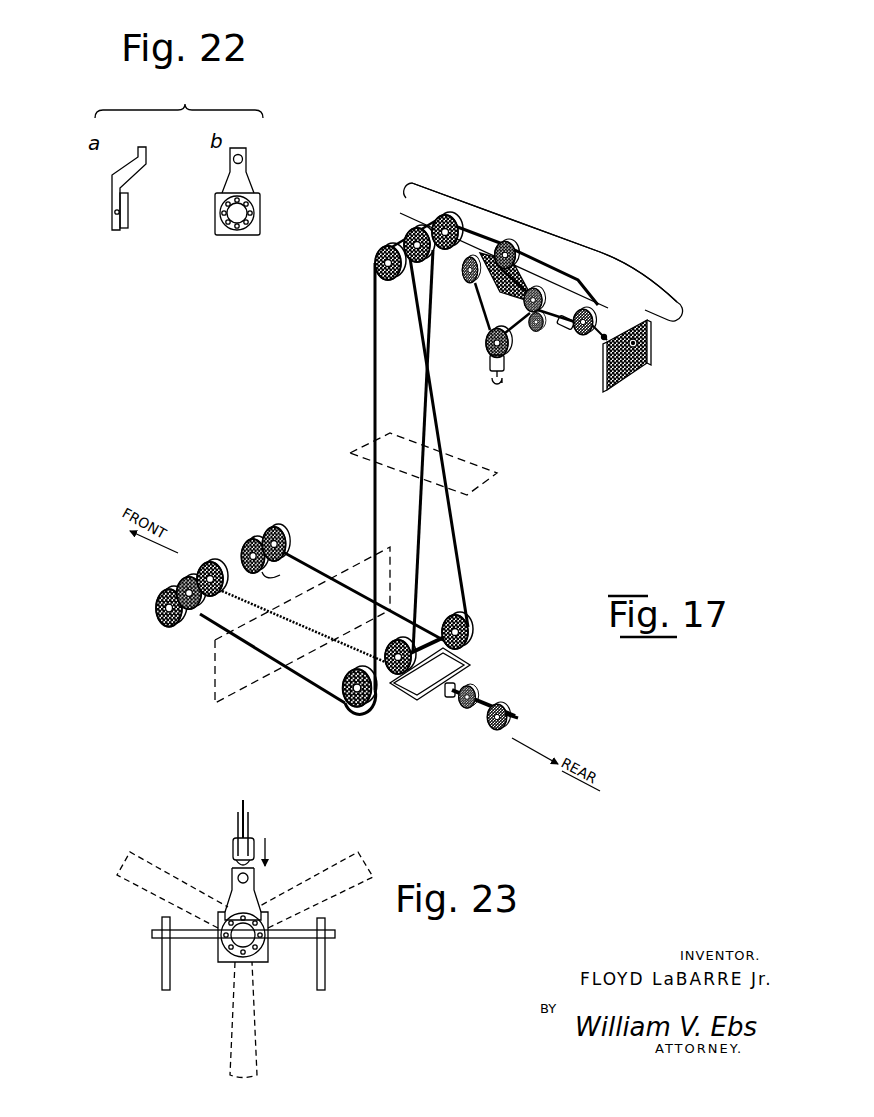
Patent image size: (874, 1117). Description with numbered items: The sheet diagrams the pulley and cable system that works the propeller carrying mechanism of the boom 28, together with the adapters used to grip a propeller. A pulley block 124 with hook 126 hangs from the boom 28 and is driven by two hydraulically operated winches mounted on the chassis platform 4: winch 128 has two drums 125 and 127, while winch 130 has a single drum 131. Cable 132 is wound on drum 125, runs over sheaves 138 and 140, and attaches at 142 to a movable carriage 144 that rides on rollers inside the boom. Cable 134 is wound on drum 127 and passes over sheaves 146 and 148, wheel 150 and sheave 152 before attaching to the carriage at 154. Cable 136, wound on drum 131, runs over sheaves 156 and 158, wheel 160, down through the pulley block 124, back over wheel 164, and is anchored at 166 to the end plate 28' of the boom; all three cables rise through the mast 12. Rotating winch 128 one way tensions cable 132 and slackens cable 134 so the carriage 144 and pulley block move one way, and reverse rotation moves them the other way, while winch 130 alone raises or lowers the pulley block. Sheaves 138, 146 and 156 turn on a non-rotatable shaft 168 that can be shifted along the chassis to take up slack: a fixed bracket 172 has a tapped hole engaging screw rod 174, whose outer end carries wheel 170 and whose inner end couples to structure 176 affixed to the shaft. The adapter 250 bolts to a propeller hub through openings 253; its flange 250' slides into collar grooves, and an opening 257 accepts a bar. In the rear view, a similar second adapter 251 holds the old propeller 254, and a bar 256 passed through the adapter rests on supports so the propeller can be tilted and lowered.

In FIG. 22, the adapter 250 is at (205, 188).
In FIG. 22, the flange of adapter 250' is at (151, 218).
In FIG. 22, the opening in adapter 257 is at (114, 213).
In FIG. 22, the openings in adapter 253 is at (253, 218).
In FIG. 17, the movable carriage 144 is at (545, 246).
In FIG. 17, the boom 28 is at (566, 231).
In FIG. 17, the mast 12 is at (490, 486).
In FIG. 17, the chassis platform 4 is at (214, 678).
In FIG. 17, the cable 132 is at (375, 370).
In FIG. 17, the cable 134 is at (300, 630).
In FIG. 17, the cable 136 is at (306, 568).
In FIG. 17, the sheave 146 is at (418, 690).
In FIG. 17, the structure 176 is at (468, 660).
In FIG. 17, the sheave 140 is at (375, 263).
In FIG. 17, the sheave 158 is at (408, 235).
In FIG. 17, the sheave 148 is at (446, 215).
In FIG. 17, the wheel 150 is at (506, 241).
In FIG. 17, the wheel 160 is at (468, 282).
In FIG. 17, the attachment point 154 is at (545, 300).
In FIG. 17, the wheel 164 is at (536, 330).
In FIG. 17, the sheave 152 is at (600, 307).
In FIG. 17, the wheel / attachment point 142 is at (487, 336).
In FIG. 17, the pulley block 124 is at (510, 348).
In FIG. 23, the pulley block 124 is at (232, 853).
In FIG. 17, the hook 126 is at (497, 390).
In FIG. 17, the end plate of boom 28' is at (650, 356).
In FIG. 17, the attachment point 166 is at (640, 338).
In FIG. 17, the drum 125 is at (172, 630).
In FIG. 17, the drum 127 is at (196, 614).
In FIG. 17, the winch 128 is at (197, 560).
In FIG. 17, the winch 130 is at (277, 526).
In FIG. 17, the drum 131 is at (283, 565).
In FIG. 17, the sheave 138 is at (352, 712).
In FIG. 17, the non-rotatable shaft 168 is at (423, 640).
In FIG. 17, the sheave 156 is at (470, 624).
In FIG. 17, the fixed bracket 172 is at (450, 702).
In FIG. 17, the screw rod 174 is at (478, 688).
In FIG. 17, the wheel 170 is at (505, 710).
In FIG. 23, the second adapter 251 is at (226, 963).
In FIG. 23, the old propeller 254 is at (297, 890).
In FIG. 23, the bar 256 is at (300, 940).